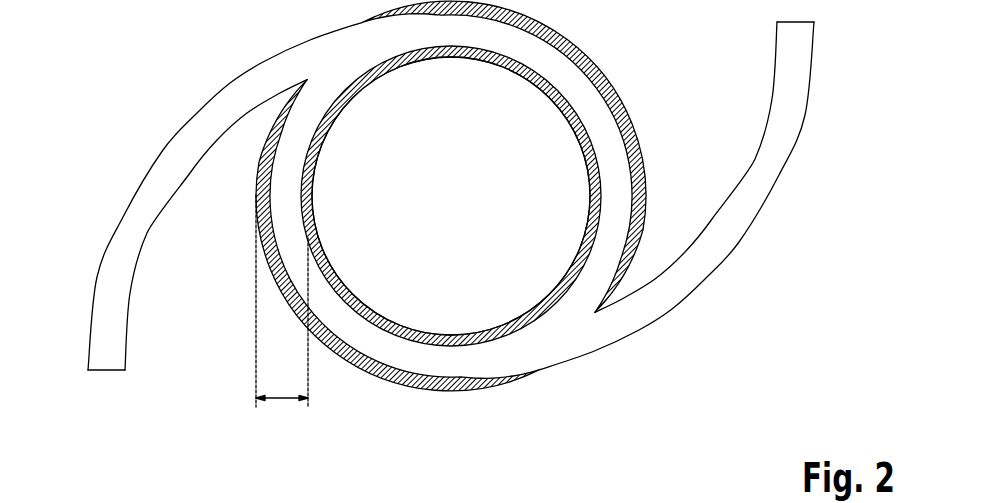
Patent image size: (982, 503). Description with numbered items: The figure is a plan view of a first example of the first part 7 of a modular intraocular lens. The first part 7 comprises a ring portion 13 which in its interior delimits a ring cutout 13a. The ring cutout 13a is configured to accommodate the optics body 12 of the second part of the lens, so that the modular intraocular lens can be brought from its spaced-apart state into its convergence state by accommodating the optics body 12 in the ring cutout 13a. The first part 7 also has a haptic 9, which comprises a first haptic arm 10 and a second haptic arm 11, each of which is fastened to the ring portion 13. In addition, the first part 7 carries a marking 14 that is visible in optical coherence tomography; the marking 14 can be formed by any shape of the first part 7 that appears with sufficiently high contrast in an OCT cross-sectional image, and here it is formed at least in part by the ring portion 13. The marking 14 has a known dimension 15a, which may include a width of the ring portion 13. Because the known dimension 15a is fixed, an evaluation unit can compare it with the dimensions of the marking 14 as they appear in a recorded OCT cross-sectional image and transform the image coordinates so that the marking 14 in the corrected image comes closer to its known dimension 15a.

The first part 7 is at (762, 275).
The haptic 9 is at (452, 196).
The first haptic arm 10 is at (128, 227).
The second haptic arm 11 is at (778, 138).
The optics body 12 is at (437, 232).
The ring portion 13 is at (451, 229).
The ring cutout 13a is at (422, 313).
The marking 14 is at (257, 204).
The known dimension 15a is at (280, 402).